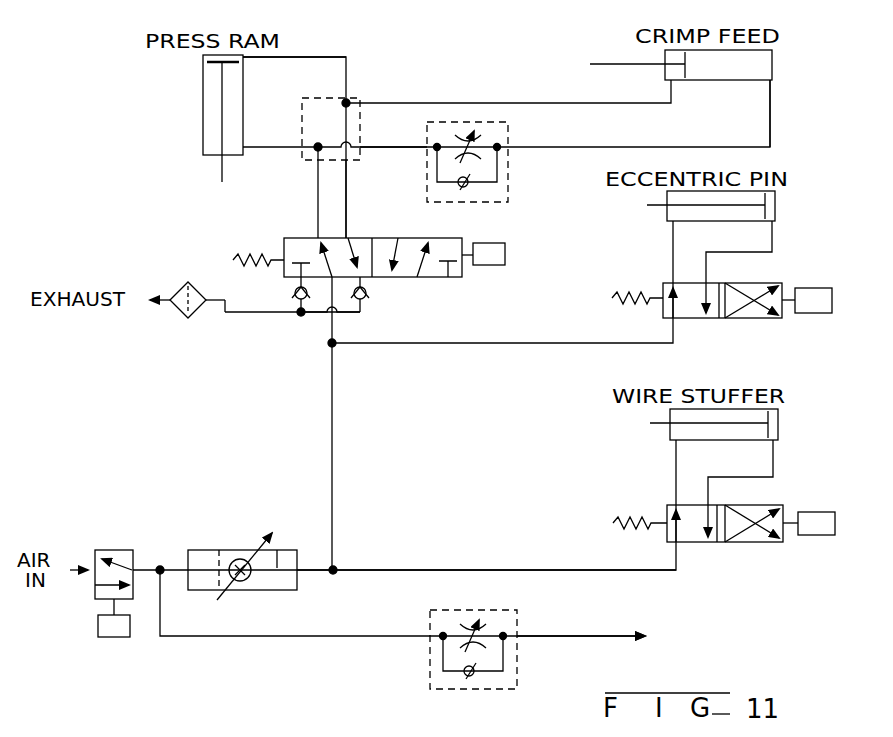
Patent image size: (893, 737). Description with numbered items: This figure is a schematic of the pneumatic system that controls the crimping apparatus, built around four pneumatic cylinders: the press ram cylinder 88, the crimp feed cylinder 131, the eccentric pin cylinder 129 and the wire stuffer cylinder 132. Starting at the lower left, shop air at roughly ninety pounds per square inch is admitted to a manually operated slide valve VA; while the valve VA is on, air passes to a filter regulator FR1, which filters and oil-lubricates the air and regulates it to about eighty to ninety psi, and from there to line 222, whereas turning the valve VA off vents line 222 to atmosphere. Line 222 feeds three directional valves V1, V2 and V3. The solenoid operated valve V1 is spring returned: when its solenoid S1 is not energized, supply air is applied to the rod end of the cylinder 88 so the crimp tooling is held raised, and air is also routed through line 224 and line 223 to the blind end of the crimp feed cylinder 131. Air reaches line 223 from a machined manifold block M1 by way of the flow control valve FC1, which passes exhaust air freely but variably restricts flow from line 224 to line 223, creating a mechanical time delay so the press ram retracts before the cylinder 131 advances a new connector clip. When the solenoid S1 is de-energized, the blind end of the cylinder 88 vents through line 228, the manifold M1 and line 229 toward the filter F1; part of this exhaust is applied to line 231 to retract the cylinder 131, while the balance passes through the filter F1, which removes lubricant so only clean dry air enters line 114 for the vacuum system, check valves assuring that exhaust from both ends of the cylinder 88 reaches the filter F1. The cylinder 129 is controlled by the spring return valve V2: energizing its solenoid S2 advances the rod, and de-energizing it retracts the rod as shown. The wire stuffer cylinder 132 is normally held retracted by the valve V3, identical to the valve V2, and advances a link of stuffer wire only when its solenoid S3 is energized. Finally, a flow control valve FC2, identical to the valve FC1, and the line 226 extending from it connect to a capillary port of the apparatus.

The press ram cylinder 88 is at (203, 92).
The line 228 is at (313, 57).
The manifold block M1 is at (352, 97).
The line 231 is at (475, 103).
The crimp feed cylinder 131 is at (772, 64).
The line 223 is at (770, 112).
The flow control valve FC1 is at (508, 136).
The line 224 is at (396, 148).
The eccentric pin cylinder 129 is at (775, 205).
The line 229 is at (350, 210).
The solenoid operated directional valve V1 is at (302, 238).
The solenoid S1 is at (488, 243).
The filter F1 is at (197, 288).
The line 114 is at (162, 302).
The spring return solenoid operated directional valve V2 is at (663, 285).
The solenoid S2 is at (808, 288).
The wire stuffer cylinder 132 is at (778, 421).
The valve V3 is at (667, 505).
The solenoid S3 is at (820, 512).
The manually operated slide valve VA is at (120, 550).
The filter regulator FR1 is at (205, 550).
The line 222 is at (313, 568).
The flow control valve FC2 is at (517, 625).
The line 226 is at (570, 637).